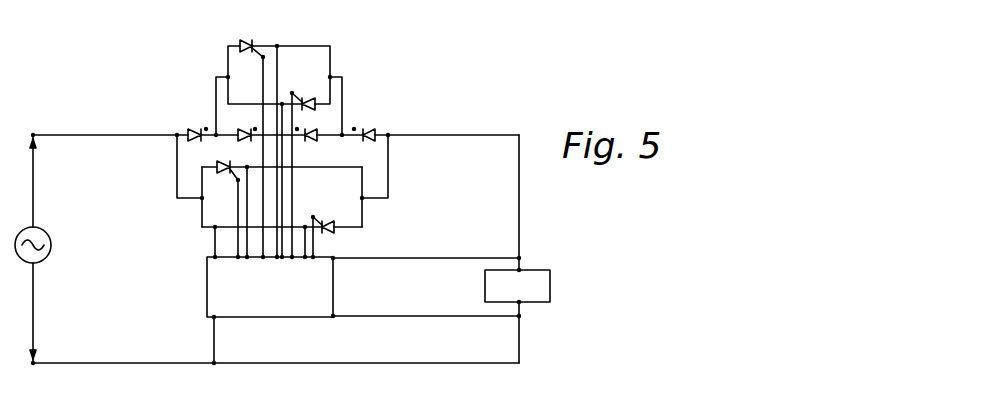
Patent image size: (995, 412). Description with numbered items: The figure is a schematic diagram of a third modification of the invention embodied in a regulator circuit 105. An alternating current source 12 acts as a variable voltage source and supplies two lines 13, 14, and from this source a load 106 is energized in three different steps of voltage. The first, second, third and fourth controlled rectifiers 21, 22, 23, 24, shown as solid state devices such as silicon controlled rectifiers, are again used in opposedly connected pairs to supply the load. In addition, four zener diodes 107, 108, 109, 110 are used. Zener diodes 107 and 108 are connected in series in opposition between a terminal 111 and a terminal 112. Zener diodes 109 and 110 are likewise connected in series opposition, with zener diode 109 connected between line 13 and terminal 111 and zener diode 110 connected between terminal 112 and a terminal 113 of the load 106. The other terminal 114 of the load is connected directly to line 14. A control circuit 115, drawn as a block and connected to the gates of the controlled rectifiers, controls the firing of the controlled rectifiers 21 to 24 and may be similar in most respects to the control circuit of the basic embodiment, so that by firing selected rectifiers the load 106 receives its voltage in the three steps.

The alternating current source 12 is at (49, 234).
The line 13 is at (88, 133).
The line 14 is at (152, 364).
The first controlled rectifier 21 is at (248, 40).
The second controlled rectifier 22 is at (301, 97).
The third controlled rectifier 23 is at (228, 173).
The fourth controlled rectifier 24 is at (327, 234).
The regulator circuit 105 is at (127, 308).
The load 106 is at (550, 290).
The zener diode 107 is at (248, 128).
The zener diode 108 is at (306, 141).
The zener diode 109 is at (199, 128).
The zener diode 110 is at (372, 132).
The terminal 111 is at (215, 138).
The terminal 112 is at (343, 133).
The terminal of the load 113 is at (519, 259).
The terminal of the load 114 is at (519, 317).
The control circuit 115 is at (243, 318).